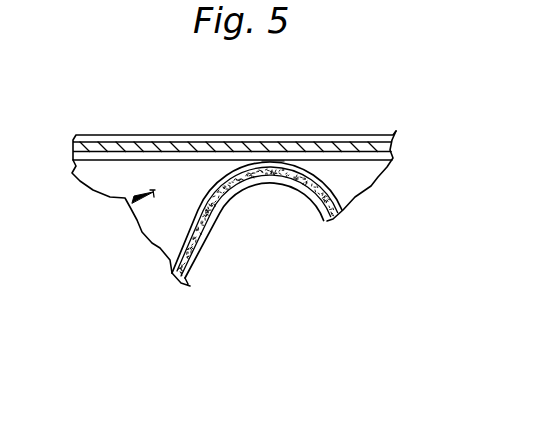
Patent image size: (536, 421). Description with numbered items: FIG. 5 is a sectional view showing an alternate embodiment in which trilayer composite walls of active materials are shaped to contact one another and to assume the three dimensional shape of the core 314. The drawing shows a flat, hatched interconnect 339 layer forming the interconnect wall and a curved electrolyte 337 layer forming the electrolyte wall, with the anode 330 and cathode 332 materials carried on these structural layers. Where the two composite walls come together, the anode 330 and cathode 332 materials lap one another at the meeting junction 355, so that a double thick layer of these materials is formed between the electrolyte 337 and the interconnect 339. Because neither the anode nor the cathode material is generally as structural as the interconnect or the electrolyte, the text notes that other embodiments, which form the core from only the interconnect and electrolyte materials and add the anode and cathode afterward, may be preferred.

The core 314 is at (140, 196).
The anode 330 is at (375, 133).
The cathode 332 is at (358, 159).
The electrolyte 337 is at (186, 279).
The interconnect 339 is at (123, 141).
The meeting junction 355 is at (277, 157).